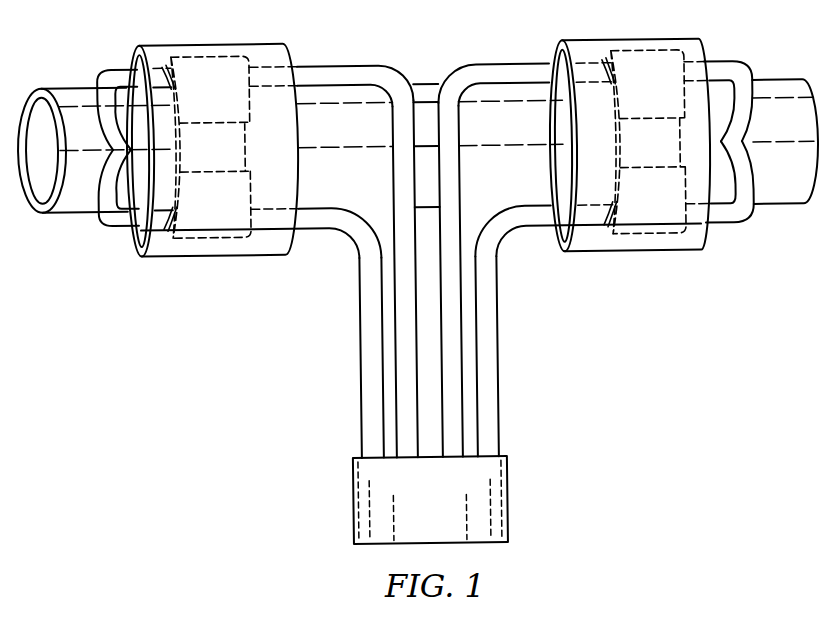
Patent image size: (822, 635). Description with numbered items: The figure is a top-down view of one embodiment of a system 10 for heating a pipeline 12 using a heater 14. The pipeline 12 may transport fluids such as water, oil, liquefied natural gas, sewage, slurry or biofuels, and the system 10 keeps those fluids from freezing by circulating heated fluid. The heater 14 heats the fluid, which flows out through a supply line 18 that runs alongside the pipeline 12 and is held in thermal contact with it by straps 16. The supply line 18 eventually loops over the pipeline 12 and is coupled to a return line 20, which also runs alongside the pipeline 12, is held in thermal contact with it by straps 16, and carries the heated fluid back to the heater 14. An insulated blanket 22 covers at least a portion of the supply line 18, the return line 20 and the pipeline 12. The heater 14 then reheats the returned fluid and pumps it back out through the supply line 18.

The system 10 is at (693, 279).
The pipeline 12 is at (766, 197).
The heater 14 is at (352, 501).
The straps 16 is at (198, 240).
The supply line 18 is at (120, 229).
The return line 20 is at (117, 70).
The insulated blanket 22 is at (214, 45).